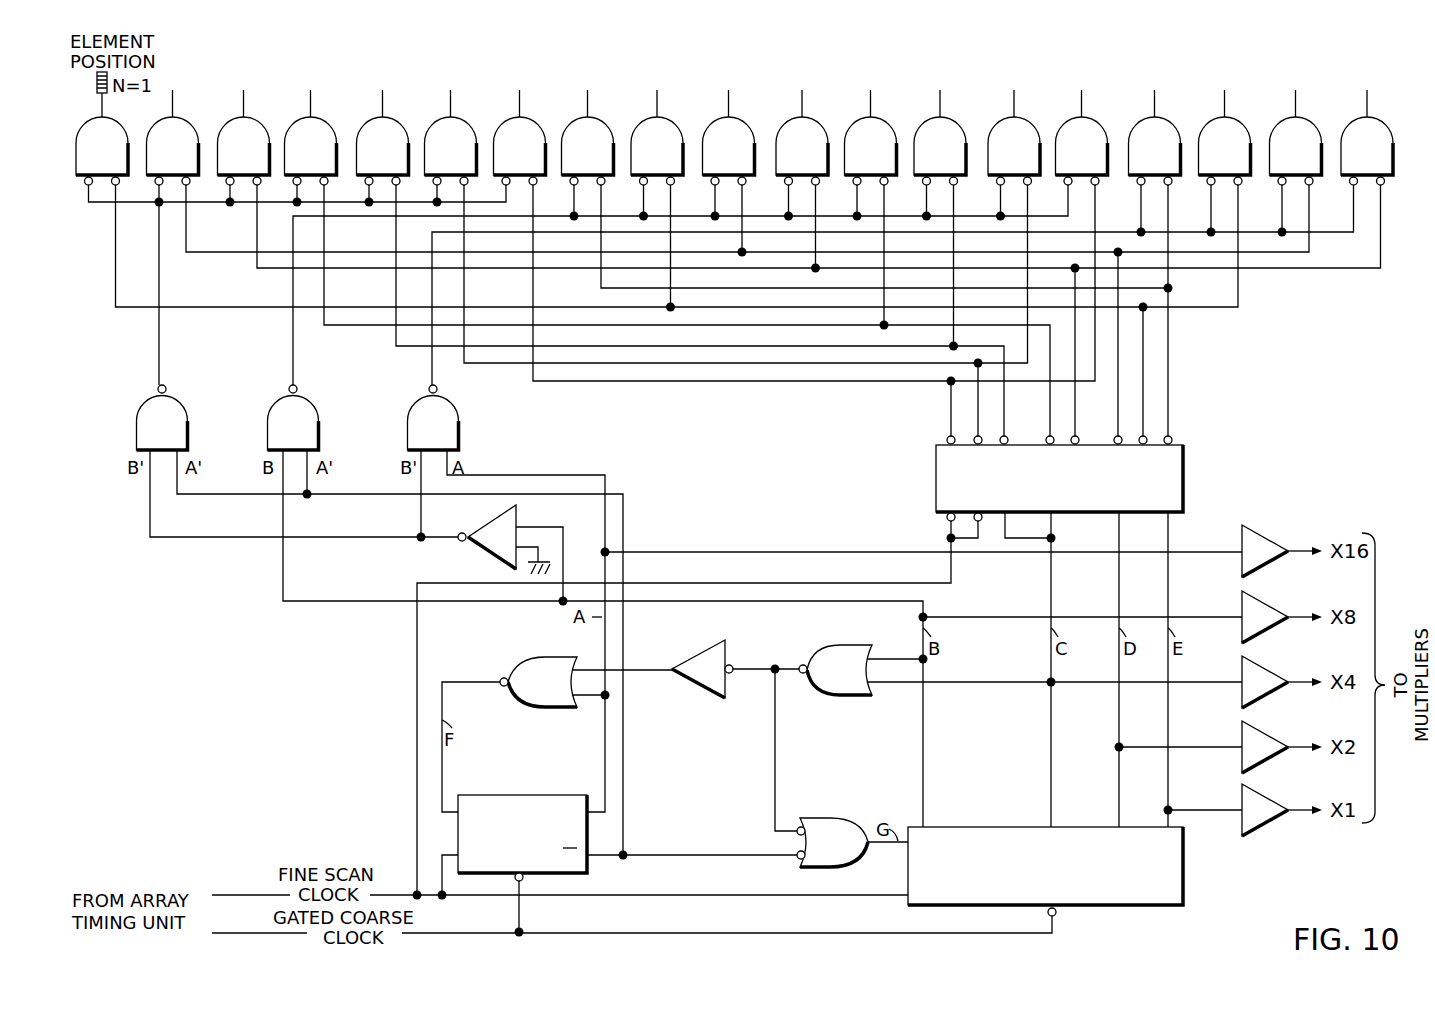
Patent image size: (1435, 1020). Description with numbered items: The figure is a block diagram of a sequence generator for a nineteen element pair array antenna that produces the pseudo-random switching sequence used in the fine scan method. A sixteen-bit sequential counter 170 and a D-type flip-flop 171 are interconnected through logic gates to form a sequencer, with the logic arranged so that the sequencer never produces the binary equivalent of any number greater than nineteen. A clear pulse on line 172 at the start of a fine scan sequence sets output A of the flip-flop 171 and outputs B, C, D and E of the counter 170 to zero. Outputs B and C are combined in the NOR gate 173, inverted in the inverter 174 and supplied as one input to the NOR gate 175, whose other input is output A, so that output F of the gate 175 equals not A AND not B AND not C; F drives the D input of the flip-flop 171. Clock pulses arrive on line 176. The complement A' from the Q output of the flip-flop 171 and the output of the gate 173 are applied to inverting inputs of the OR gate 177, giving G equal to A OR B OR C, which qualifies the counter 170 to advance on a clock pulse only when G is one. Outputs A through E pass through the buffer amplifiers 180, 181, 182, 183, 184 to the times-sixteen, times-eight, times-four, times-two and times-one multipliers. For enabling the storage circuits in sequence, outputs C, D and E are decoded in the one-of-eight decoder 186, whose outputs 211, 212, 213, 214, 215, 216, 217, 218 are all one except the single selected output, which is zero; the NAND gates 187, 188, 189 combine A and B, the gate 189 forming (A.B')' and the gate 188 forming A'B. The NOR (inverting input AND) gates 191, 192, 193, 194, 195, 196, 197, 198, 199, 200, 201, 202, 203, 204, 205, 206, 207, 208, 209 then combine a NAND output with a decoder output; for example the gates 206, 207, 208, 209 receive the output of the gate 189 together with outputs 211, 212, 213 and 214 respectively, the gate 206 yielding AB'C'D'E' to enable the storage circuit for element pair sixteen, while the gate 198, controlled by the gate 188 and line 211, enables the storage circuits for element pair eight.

The sequential counter 170 is at (1185, 865).
The D-type flip-flop 171 is at (502, 795).
The clear pulse line 172 is at (545, 932).
The NOR gate 173 is at (812, 648).
The inverter 174 is at (681, 662).
The NOR gate 175 is at (546, 707).
The clock pulse line 176 is at (716, 895).
The OR gate 177 is at (837, 818).
The buffer amplifier 180 is at (1266, 534).
The buffer amplifier 181 is at (1264, 608).
The buffer amplifier 182 is at (1264, 673).
The buffer amplifier 183 is at (1266, 738).
The buffer amplifier 184 is at (1264, 801).
The 1 of 8 decoder 186 is at (936, 468).
The NAND gate 187 is at (181, 404).
The NAND gate 188 is at (312, 404).
The NAND gate 189 is at (452, 404).
The NOR gate 191 is at (106, 118).
The NOR gate 192 is at (176, 118).
The NOR gate 193 is at (248, 118).
The NOR gate 194 is at (314, 118).
The NOR gate 195 is at (386, 118).
The NOR gate 196 is at (454, 118).
The NOR gate 197 is at (524, 118).
The NOR gate 198 is at (592, 118).
The NOR gate 199 is at (661, 118).
The NOR gate 200 is at (732, 118).
The NOR gate 201 is at (806, 118).
The NOR gate 202 is at (874, 118).
The NOR gate 203 is at (944, 118).
The NOR gate 204 is at (1018, 118).
The NOR gate 205 is at (1086, 118).
The NOR gate 206 is at (1158, 118).
The NOR gate 207 is at (1228, 118).
The NOR gate 208 is at (1300, 118).
The NOR gate 209 is at (1371, 118).
The decoder output 211 is at (1166, 436).
The decoder output 212 is at (1141, 436).
The decoder output 213 is at (1116, 436).
The decoder output 214 is at (1073, 436).
The decoder output 215 is at (1048, 436).
The decoder output 216 is at (1002, 436).
The decoder output 217 is at (976, 436).
The decoder output 218 is at (949, 436).